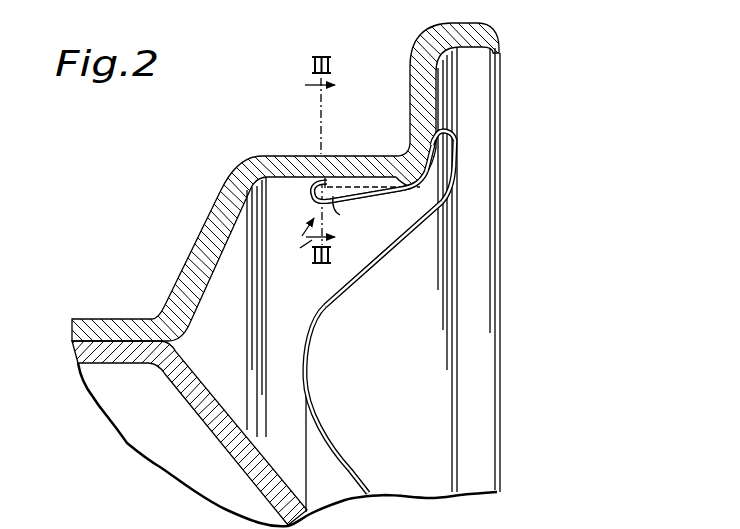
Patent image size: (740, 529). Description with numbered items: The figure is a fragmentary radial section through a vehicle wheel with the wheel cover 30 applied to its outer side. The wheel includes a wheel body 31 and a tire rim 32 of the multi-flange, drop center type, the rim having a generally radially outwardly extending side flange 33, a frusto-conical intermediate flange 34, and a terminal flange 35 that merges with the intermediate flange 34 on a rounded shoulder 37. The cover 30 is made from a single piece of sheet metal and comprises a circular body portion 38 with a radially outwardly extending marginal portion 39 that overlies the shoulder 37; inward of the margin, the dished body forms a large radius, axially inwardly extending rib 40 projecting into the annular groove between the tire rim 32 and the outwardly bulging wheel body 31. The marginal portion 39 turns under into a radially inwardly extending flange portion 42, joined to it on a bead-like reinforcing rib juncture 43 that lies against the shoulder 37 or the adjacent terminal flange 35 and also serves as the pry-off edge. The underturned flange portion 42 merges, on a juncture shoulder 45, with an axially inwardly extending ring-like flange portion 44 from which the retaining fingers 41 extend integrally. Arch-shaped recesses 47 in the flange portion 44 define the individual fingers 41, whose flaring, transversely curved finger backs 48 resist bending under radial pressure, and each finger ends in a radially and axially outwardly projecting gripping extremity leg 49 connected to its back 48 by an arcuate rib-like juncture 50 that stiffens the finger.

The wheel cover 30 is at (486, 358).
The wheel body 31 is at (234, 438).
The tire rim 32 is at (134, 292).
The side flange 33 is at (191, 252).
The intermediate flange 34 is at (298, 158).
The terminal flange 35 is at (434, 40).
The rounded shoulder 37 is at (405, 153).
The circular body portion 38 is at (343, 458).
The marginal portion 39 is at (448, 175).
The rib 40 is at (313, 343).
The retaining fingers 41 is at (290, 253).
The underturned flange portion 42 is at (459, 151).
The reinforcing rib juncture 43 is at (449, 132).
The ring-like flange portion 44 is at (386, 236).
The juncture shoulder 45 is at (402, 188).
The recesses 47 is at (342, 199).
The finger backs 48 is at (341, 214).
The gripping extremity leg 49 is at (311, 190).
The rib-like junctures 50 is at (292, 227).